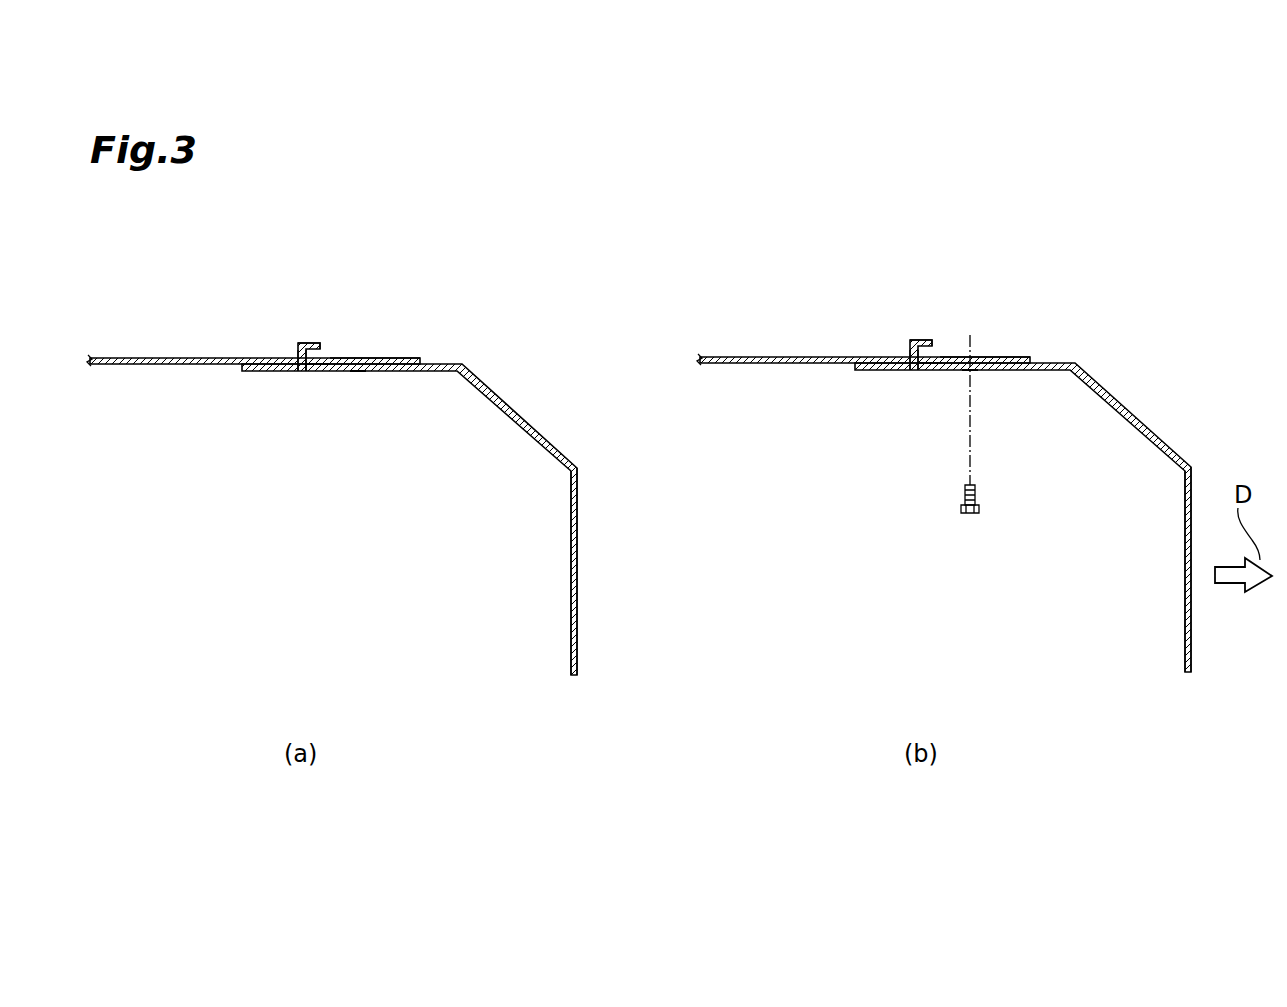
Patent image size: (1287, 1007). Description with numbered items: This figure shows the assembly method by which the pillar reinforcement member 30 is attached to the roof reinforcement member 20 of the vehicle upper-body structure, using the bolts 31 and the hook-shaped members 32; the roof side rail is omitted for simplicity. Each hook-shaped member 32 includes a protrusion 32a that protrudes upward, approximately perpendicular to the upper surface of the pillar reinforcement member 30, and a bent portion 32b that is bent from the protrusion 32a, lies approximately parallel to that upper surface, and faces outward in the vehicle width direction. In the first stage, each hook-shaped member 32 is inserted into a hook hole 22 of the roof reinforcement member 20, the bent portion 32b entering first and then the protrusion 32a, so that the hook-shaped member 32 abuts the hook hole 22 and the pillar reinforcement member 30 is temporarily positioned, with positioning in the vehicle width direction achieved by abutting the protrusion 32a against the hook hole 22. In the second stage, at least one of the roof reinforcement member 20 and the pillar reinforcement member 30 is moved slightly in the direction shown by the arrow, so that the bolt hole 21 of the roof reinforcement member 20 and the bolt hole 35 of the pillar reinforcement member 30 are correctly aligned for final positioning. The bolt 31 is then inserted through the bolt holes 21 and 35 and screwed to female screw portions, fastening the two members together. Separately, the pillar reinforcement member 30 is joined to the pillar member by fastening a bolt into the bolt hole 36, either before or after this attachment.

The roof reinforcement member 20 is at (165, 358).
The bolt hole 21 is at (365, 358).
The hook hole 22 is at (319, 360).
The pillar reinforcement member 30 is at (514, 413).
The bolt 31 is at (977, 496).
The hook-shaped member 32 is at (313, 304).
The protrusion 32a is at (293, 372).
The bent portion 32b is at (312, 343).
The bolt hole 35 is at (358, 372).
The bolt hole 36 is at (571, 519).